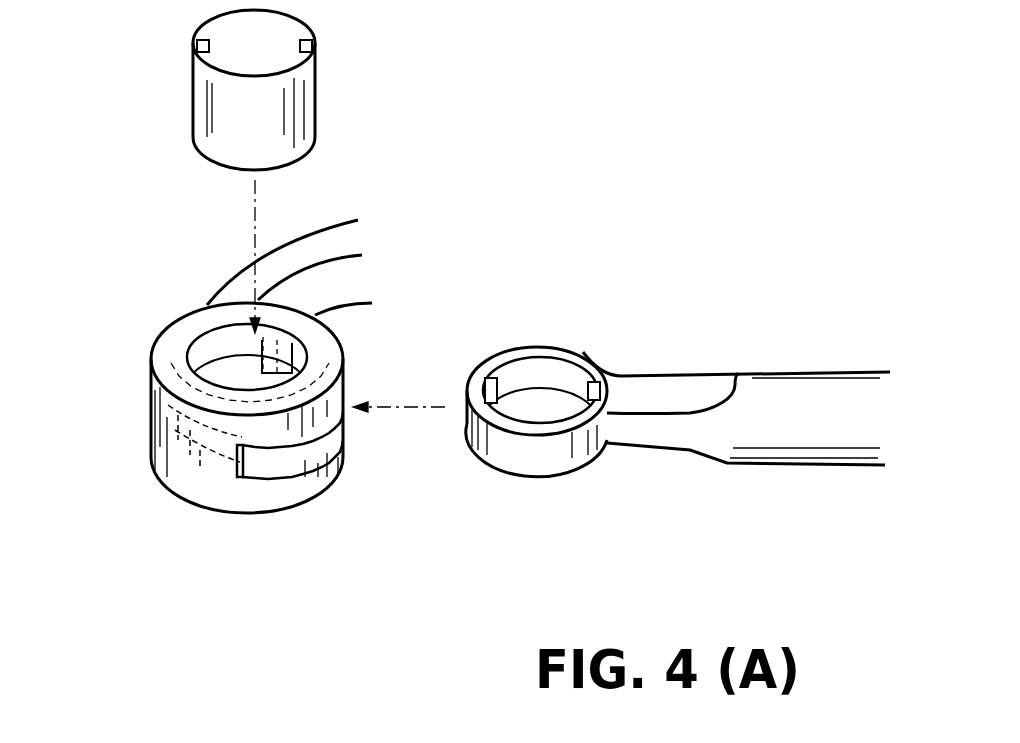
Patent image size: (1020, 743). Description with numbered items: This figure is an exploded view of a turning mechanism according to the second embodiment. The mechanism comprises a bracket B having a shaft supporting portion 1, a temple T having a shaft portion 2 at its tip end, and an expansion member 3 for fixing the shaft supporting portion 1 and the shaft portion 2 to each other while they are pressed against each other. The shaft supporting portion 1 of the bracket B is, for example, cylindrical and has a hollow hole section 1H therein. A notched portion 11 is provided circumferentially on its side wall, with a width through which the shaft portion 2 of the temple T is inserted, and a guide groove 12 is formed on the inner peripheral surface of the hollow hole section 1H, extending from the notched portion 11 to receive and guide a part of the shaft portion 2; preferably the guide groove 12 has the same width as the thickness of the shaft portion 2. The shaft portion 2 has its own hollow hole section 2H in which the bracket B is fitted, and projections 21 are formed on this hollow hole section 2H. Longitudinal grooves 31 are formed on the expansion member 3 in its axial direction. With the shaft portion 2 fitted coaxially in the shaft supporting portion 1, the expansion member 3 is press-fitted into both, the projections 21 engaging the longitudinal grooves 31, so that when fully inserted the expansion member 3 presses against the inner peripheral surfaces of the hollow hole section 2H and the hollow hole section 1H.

The shaft supporting portion 1 is at (163, 355).
The hollow hole section 1H is at (217, 350).
The notched portion 11 is at (298, 453).
The guide groove 12 is at (207, 453).
The expansion member 3 is at (305, 115).
The longitudinal grooves 31 is at (197, 45).
The bracket B is at (320, 233).
The shaft portion 2 is at (583, 350).
The hollow hole section 2H is at (525, 370).
The projections 21 is at (500, 397).
The temple T is at (800, 382).